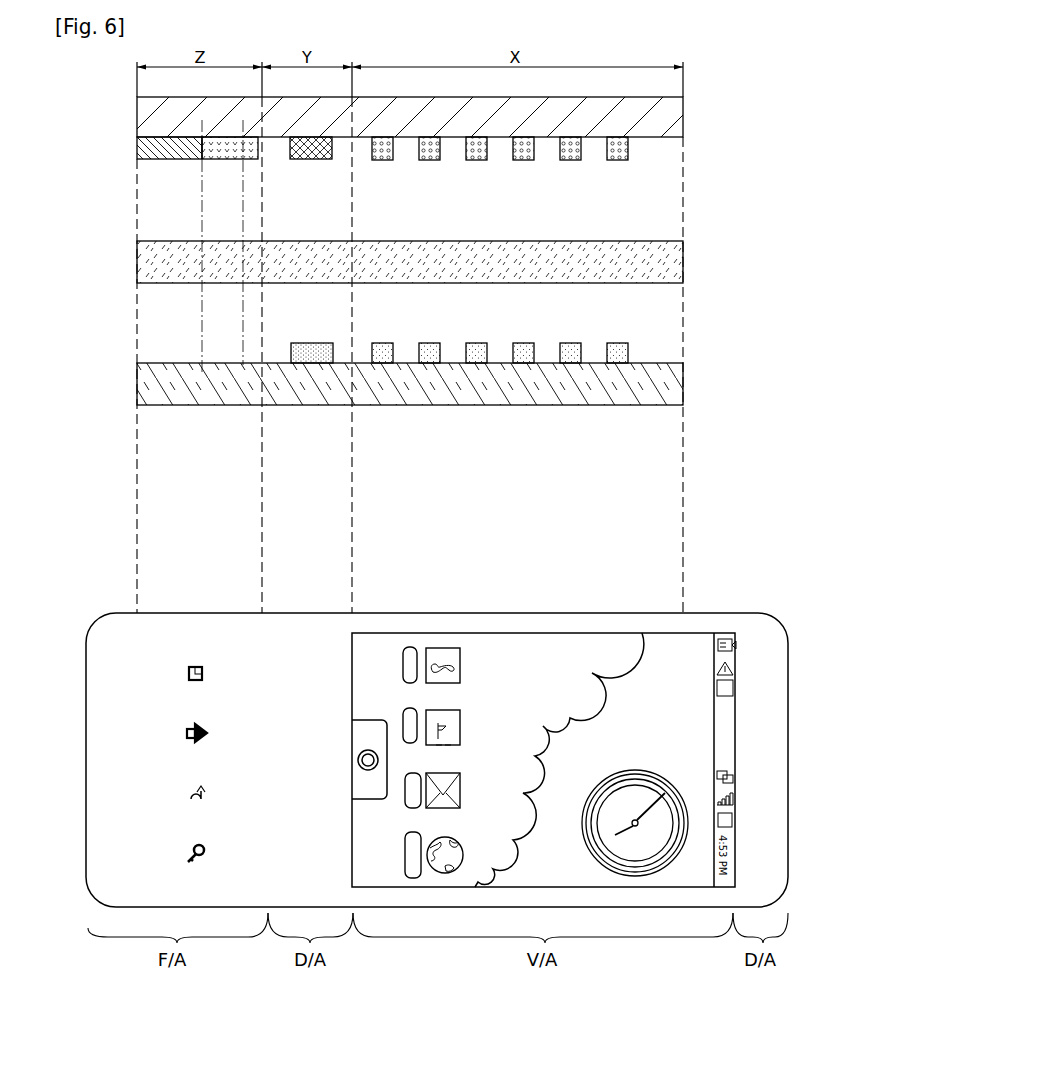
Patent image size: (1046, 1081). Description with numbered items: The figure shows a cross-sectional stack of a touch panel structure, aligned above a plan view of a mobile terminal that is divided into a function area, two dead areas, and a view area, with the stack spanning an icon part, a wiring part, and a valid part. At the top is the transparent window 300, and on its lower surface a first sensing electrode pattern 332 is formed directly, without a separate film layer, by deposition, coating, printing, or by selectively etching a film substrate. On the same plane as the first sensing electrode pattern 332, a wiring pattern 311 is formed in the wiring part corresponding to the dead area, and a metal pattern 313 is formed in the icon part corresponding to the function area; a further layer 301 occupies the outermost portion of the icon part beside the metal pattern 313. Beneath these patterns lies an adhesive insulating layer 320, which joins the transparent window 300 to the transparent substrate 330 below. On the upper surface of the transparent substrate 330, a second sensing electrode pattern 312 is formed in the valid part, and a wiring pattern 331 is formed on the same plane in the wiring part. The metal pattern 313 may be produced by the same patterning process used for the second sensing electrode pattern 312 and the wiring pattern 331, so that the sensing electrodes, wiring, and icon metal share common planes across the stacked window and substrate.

The transparent window 300 is at (673, 120).
The light blocking layer 301 is at (137, 150).
The metal pattern part 313 is at (228, 160).
The wiring pattern 311 is at (310, 160).
The first sensing electrode pattern 332 is at (623, 160).
The adhesive insulating layer 320 is at (673, 267).
The wiring pattern 331 is at (307, 342).
The second sensing electrode pattern 312 is at (623, 342).
The transparent substrate 330 is at (673, 379).